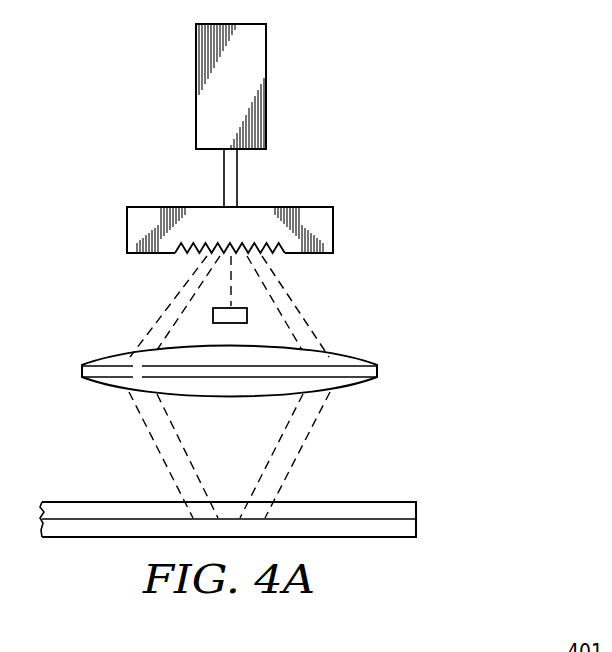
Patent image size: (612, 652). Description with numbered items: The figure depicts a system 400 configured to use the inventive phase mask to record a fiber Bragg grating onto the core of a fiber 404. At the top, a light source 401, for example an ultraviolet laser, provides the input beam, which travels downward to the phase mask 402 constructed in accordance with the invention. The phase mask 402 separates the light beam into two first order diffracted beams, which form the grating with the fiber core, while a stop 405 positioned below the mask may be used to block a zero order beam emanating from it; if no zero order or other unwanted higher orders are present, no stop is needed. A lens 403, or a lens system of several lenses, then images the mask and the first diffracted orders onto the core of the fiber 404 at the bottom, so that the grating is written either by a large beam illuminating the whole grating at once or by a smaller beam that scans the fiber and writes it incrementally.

The system 400 is at (342, 92).
The light source 401 is at (196, 86).
The phase mask 402 is at (127, 230).
The lens 403 is at (82, 371).
The fiber 404 is at (416, 510).
The stop 405 is at (247, 316).